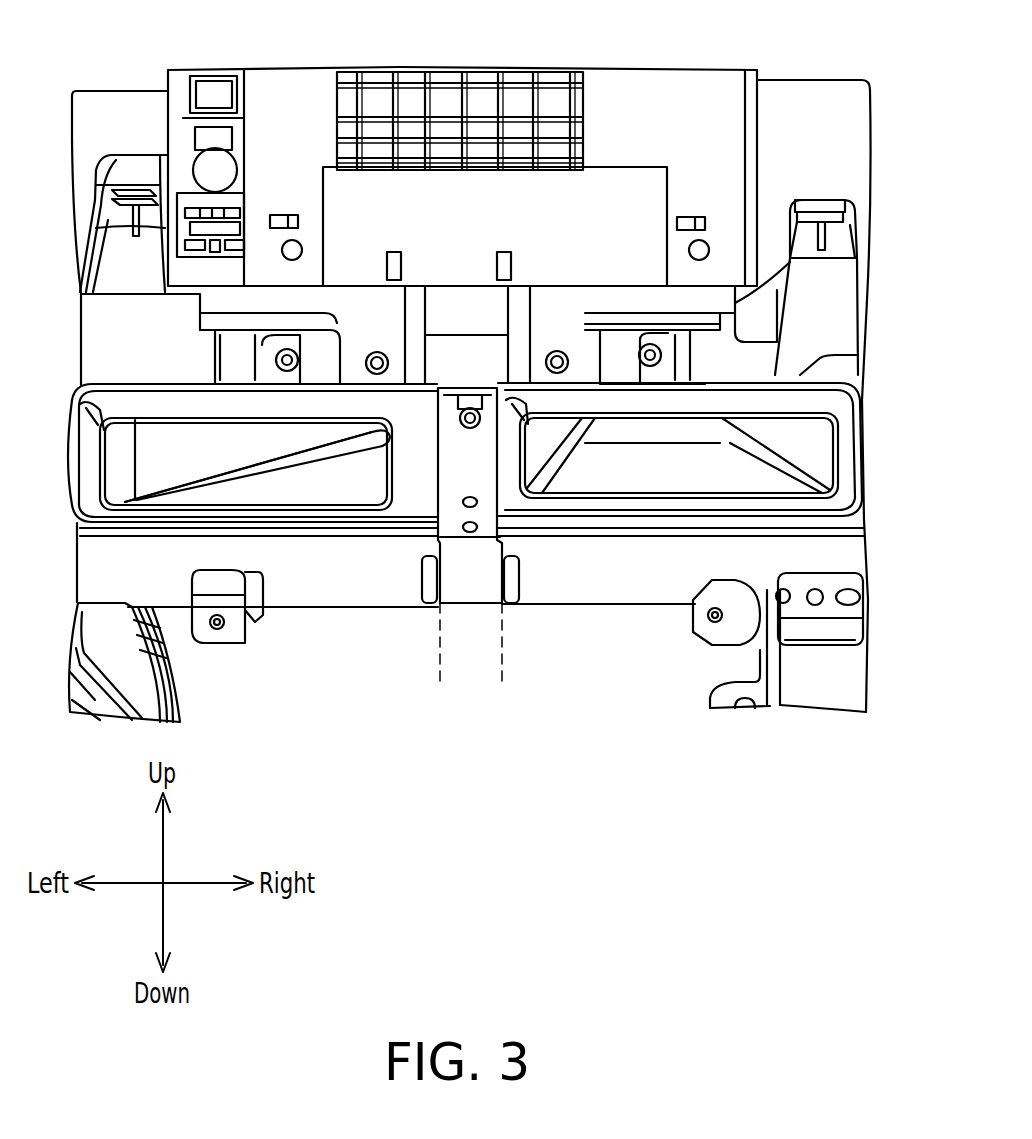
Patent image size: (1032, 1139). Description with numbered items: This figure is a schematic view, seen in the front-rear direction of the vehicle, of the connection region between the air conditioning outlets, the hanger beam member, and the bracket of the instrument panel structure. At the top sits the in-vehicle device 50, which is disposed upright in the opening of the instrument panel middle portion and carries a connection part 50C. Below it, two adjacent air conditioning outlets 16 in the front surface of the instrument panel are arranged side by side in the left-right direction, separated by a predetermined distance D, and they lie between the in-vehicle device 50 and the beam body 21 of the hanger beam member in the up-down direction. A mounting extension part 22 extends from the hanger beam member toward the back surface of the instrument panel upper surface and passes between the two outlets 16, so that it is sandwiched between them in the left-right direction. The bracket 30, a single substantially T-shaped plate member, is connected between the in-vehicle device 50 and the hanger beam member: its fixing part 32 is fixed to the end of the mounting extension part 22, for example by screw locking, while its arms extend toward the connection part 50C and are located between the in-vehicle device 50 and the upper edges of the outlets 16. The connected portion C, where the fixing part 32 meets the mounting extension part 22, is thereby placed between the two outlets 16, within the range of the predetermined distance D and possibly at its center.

The in-vehicle device 50 is at (667, 95).
The connection part 50C is at (713, 317).
The bracket 30 is at (445, 370).
The air conditioning outlets 16 is at (115, 468).
The beam body 21 is at (827, 552).
The fixing part 32 is at (372, 447).
The mounting extension part 22 is at (450, 480).
The connected portion C is at (462, 424).
The predetermined distance D is at (441, 680).